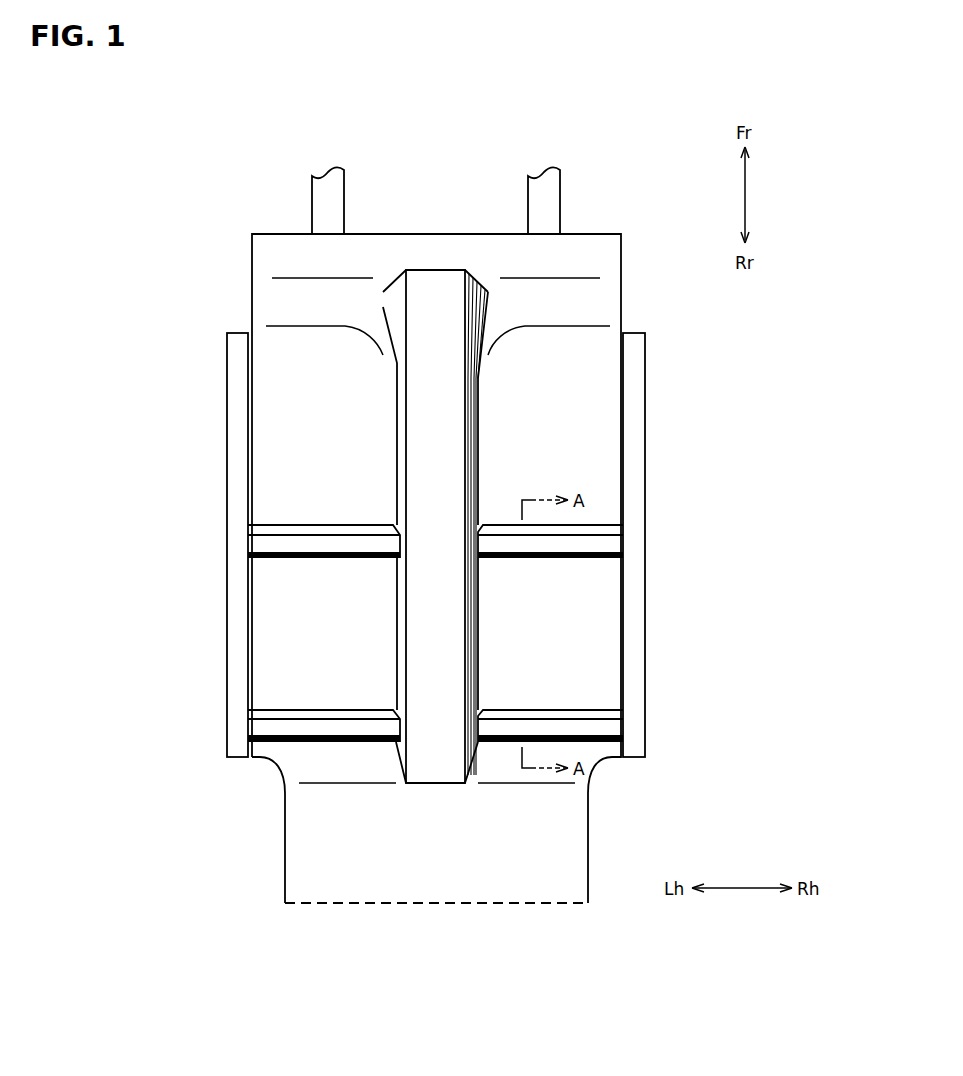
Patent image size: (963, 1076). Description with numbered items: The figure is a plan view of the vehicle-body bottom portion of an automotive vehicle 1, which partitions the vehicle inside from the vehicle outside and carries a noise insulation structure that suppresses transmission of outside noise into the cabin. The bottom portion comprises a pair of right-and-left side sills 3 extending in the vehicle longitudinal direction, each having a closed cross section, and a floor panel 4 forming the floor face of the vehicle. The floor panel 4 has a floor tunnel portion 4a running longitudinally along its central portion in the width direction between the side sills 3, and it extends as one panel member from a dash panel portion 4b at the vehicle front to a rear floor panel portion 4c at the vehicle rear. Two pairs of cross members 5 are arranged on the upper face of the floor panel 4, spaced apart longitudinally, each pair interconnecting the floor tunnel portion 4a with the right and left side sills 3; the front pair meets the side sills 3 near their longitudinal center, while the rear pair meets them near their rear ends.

The automotive vehicle 1 is at (142, 149).
The side sill 3 is at (227, 433).
The floor panel 4 is at (251, 264).
The floor tunnel portion 4a is at (425, 288).
The dash panel portion 4b is at (600, 256).
The rear floor panel portion 4c is at (300, 845).
The cross member 5 is at (273, 545).